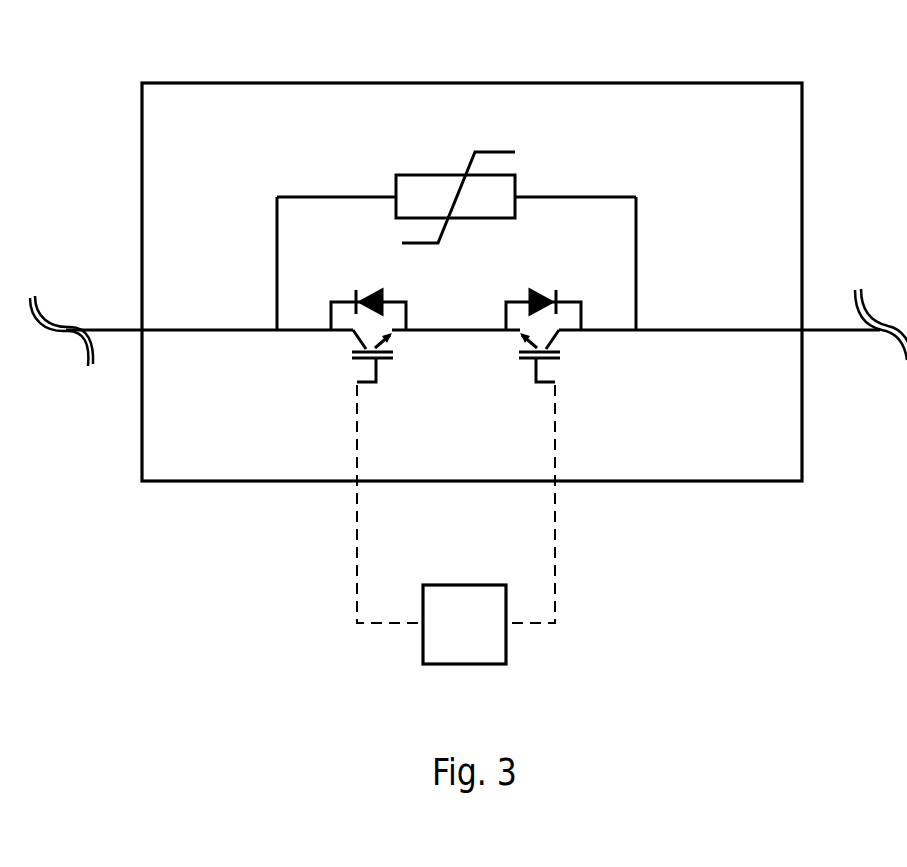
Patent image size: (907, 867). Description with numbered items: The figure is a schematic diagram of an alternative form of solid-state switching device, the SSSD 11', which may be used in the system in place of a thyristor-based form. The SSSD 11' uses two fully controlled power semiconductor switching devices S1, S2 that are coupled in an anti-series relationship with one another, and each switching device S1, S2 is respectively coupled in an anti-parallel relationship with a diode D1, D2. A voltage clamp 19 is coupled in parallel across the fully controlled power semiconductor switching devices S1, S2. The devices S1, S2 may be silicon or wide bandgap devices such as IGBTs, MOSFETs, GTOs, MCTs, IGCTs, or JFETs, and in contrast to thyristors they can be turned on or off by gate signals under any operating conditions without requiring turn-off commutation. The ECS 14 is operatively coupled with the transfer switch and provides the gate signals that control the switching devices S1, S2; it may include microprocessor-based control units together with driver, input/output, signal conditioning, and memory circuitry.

The solid-state switching device (SSSD) 11' is at (412, 267).
The voltage clamp 19 is at (441, 175).
The diode D1 is at (375, 290).
The diode D2 is at (537, 290).
The fully controlled power semiconductor switching device S1 is at (352, 335).
The fully controlled power semiconductor switching device S2 is at (560, 335).
The electronic control system (ECS) 14 is at (465, 585).